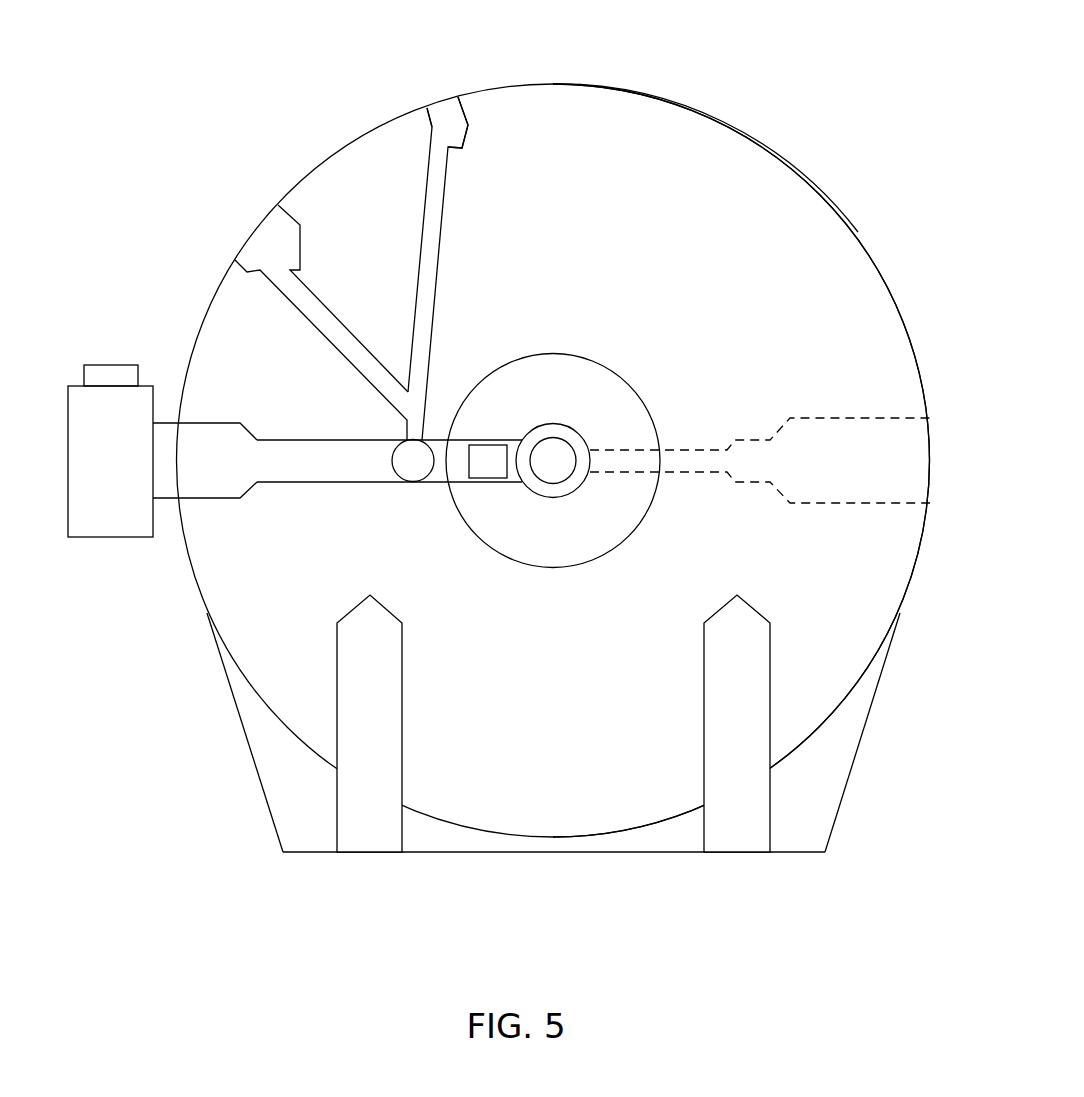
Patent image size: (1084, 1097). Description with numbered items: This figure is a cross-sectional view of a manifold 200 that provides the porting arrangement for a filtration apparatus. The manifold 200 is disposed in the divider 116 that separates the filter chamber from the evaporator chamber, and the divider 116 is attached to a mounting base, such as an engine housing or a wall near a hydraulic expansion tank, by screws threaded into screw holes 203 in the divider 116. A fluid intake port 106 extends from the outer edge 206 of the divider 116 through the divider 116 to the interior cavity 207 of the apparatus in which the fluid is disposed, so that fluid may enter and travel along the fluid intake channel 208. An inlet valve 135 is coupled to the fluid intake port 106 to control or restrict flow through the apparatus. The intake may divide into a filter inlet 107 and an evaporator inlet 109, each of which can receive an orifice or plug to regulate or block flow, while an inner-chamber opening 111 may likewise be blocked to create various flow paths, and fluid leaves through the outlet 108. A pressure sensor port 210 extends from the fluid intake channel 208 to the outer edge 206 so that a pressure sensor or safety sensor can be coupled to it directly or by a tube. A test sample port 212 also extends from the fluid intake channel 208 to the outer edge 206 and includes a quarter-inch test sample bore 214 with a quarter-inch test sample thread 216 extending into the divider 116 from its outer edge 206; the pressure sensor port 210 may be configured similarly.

The manifold 200 is at (865, 125).
The divider 116 is at (858, 232).
The outer edge 206 is at (713, 113).
The screw holes 203 is at (363, 852).
The inlet valve 135 is at (120, 537).
The fluid intake port 106 is at (195, 471).
The fluid intake channel 208 is at (310, 483).
The evaporator inlet 109 is at (425, 438).
The filter inlet 107 is at (488, 467).
The interior cavity 207 is at (567, 487).
The inner-chamber opening 111 is at (572, 437).
The outlet 108 is at (872, 450).
The pressure sensor port 210 is at (283, 245).
The test sample port 212 is at (445, 117).
The test sample bore 214 is at (452, 112).
The test sample thread 216 is at (467, 127).